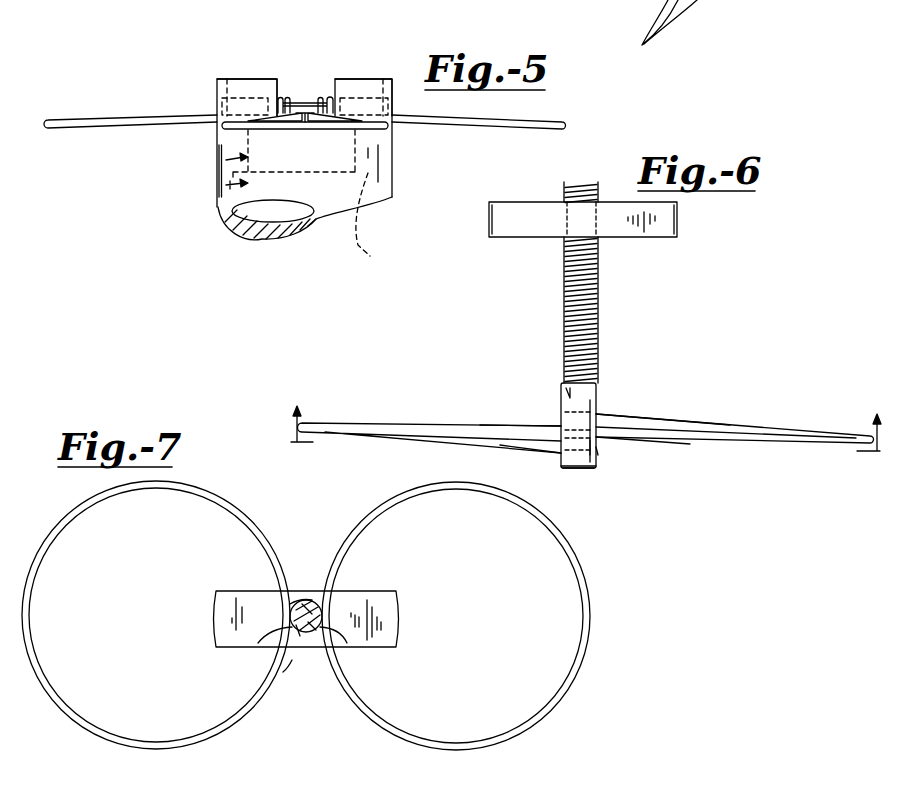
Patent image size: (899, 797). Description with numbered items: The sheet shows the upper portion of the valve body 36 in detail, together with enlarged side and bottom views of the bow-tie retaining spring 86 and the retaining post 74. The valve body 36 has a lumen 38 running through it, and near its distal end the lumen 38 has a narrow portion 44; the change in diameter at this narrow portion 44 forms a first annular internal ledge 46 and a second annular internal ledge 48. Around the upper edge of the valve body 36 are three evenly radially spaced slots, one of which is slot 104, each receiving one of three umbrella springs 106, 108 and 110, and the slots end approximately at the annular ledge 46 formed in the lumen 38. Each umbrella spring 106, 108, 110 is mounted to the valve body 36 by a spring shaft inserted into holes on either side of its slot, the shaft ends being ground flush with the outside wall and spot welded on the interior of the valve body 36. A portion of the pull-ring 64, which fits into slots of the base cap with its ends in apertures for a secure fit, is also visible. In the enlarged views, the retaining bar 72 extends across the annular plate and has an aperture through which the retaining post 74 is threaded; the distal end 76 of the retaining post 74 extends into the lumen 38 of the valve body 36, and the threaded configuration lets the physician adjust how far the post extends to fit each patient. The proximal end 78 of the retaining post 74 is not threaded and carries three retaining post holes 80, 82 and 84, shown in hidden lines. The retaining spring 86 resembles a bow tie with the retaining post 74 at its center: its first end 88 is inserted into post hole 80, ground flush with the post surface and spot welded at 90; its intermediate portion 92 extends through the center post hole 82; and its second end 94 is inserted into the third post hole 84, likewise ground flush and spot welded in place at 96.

In FIG. 5, the valve body 36 is at (395, 168).
In FIG. 5, the lumen 38 is at (217, 196).
In FIG. 5, the narrow portion 44 is at (216, 168).
In FIG. 5, the first annular internal ledge 46 is at (217, 100).
In FIG. 5, the second annular internal ledge 48 is at (372, 221).
In FIG. 5, the pull-ring 64 is at (678, 15).
In FIG. 5, the slot 104 is at (298, 82).
In FIG. 5, the umbrella spring 106 is at (72, 118).
In FIG. 5, the umbrella spring 108 is at (566, 114).
In FIG. 5, the umbrella spring 110 is at (227, 132).
In FIG. 6, the retaining bar 72 is at (622, 239).
In FIG. 7, the retaining bar 72 is at (398, 625).
In FIG. 6, the retaining post 74 is at (598, 322).
In FIG. 6, the distal end of the retaining post 76 is at (568, 184).
In FIG. 6, the proximal end of the retaining post 78 is at (590, 470).
In FIG. 6, the retaining post hole 80 is at (559, 389).
In FIG. 7, the retaining post hole 80 is at (305, 600).
In FIG. 6, the retaining post hole 82 is at (598, 455).
In FIG. 7, the retaining post hole 82 is at (298, 636).
In FIG. 6, the retaining post hole 84 is at (569, 467).
In FIG. 7, the retaining post hole 84 is at (283, 673).
In FIG. 6, the retaining spring 86 is at (737, 443).
In FIG. 7, the retaining spring 86 is at (592, 632).
In FIG. 6, the first end of the retaining spring 88 is at (622, 420).
In FIG. 7, the first end of the retaining spring 88 is at (309, 600).
In FIG. 6, the spot weld 90 is at (558, 418).
In FIG. 6, the intermediate portion 92 is at (668, 438).
In FIG. 7, the intermediate portion 92 is at (328, 630).
In FIG. 6, the second end of the retaining spring 94 is at (549, 449).
In FIG. 7, the second end of the retaining spring 94 is at (258, 642).
In FIG. 6, the spot weld 96 is at (598, 447).